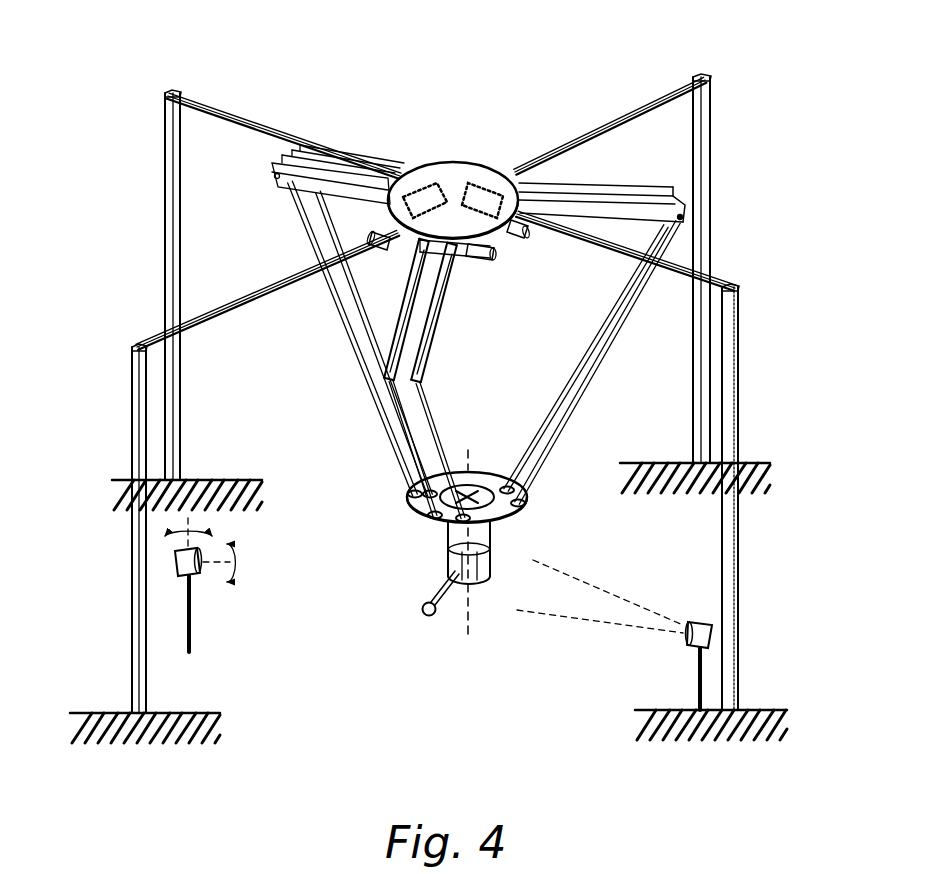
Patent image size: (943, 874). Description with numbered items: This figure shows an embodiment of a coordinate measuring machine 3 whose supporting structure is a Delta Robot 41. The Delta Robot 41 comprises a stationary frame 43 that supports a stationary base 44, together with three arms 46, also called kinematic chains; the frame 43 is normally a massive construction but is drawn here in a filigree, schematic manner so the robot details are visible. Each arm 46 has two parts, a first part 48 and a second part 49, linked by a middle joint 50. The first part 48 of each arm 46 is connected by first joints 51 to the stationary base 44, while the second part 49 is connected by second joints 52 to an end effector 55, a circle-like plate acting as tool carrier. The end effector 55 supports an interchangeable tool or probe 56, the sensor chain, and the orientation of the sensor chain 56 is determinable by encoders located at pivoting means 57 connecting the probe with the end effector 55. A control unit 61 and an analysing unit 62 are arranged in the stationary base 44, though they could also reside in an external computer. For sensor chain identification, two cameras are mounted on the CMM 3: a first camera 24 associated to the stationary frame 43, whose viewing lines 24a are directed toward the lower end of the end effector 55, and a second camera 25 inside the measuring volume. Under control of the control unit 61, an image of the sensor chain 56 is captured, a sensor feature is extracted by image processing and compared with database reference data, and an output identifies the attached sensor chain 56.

The coordinate measuring machine 3 is at (752, 31).
The first camera 24 is at (665, 666).
The field of view of camera 24a is at (581, 631).
The second camera 25 is at (224, 595).
The delta robot 41 is at (313, 418).
The stationary frame 43 is at (435, 383).
The stationary base 44 is at (452, 141).
The arm 46 is at (300, 237).
The first part of arm 48 is at (539, 196).
The second part of arm 49 is at (592, 383).
The middle joint 50 is at (742, 232).
The first joint 51 is at (469, 255).
The second joint 52 is at (501, 526).
The end effector 55 is at (417, 498).
The probe 56 is at (402, 588).
The pivoting means 57 is at (450, 555).
The control unit 61 is at (396, 154).
The analysing unit 62 is at (510, 150).